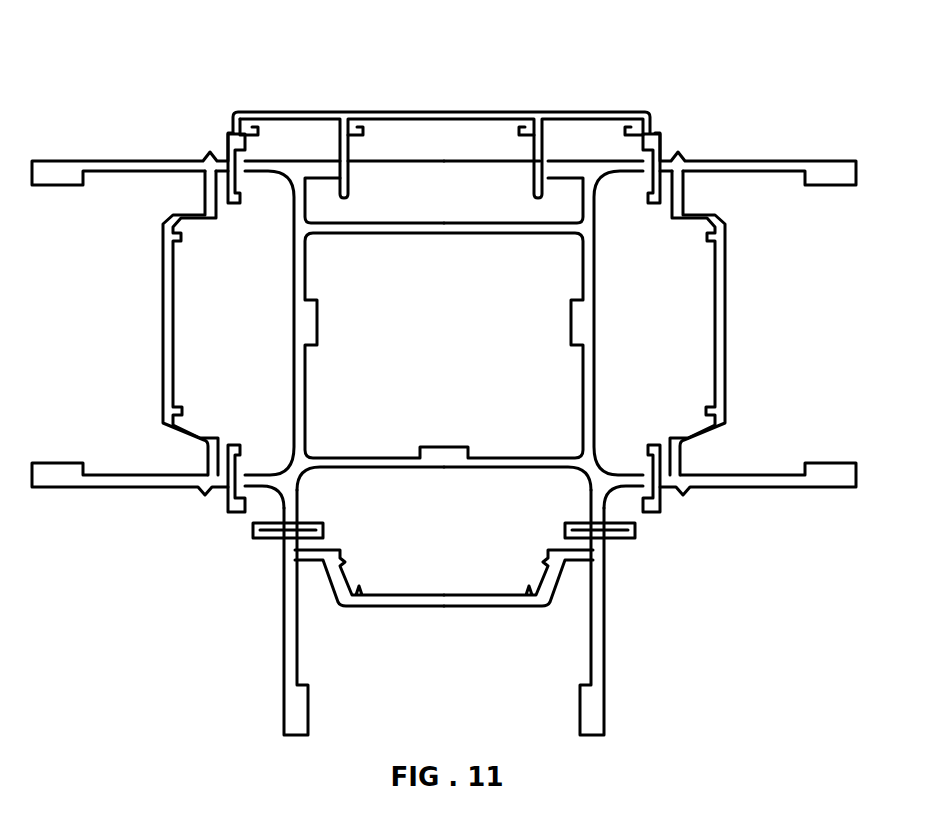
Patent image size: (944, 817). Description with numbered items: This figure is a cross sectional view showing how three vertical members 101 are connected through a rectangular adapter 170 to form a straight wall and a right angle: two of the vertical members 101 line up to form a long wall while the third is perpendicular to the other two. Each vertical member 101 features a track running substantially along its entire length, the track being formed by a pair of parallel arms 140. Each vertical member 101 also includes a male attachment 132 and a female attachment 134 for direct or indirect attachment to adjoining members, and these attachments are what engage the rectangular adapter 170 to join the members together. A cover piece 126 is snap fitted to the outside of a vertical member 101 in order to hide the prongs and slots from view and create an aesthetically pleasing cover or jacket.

The vertical member 101 is at (220, 487).
The cover piece 126 is at (443, 112).
The male attachment 132 is at (245, 180).
The female attachment 134 is at (232, 200).
The arm 140 is at (121, 161).
The rectangular adapter 170 is at (430, 233).